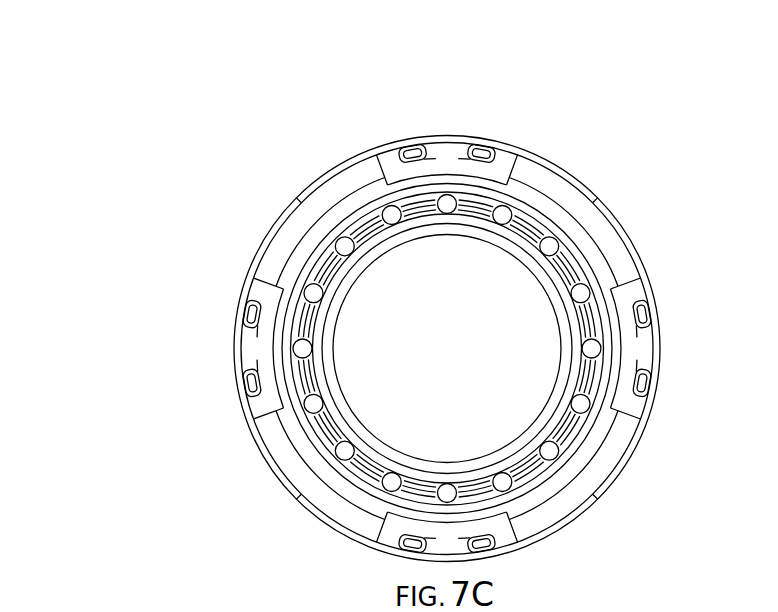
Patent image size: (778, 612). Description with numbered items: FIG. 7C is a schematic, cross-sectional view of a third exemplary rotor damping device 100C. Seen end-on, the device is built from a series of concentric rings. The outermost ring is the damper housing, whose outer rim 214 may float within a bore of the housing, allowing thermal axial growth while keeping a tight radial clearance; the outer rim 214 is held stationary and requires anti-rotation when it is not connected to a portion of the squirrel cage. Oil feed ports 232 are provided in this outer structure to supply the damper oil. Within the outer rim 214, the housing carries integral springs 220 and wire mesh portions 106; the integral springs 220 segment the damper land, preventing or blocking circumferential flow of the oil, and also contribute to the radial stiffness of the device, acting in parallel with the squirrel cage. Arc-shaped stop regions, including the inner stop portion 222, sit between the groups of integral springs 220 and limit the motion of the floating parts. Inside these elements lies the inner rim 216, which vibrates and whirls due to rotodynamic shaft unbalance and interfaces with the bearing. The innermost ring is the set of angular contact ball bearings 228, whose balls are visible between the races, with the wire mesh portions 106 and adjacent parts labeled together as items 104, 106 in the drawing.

The rotor damping device 100C is at (150, 219).
The oil feed ports 232 is at (602, 187).
The outer rim 214 is at (282, 220).
The inner stop portion 222 is at (460, 144).
The integral springs 220 is at (250, 308).
The bearing 104 is at (338, 173).
The wire mesh portions 106 is at (390, 349).
The inner rim 216 is at (317, 452).
The angular contact ball bearings 228 is at (328, 385).